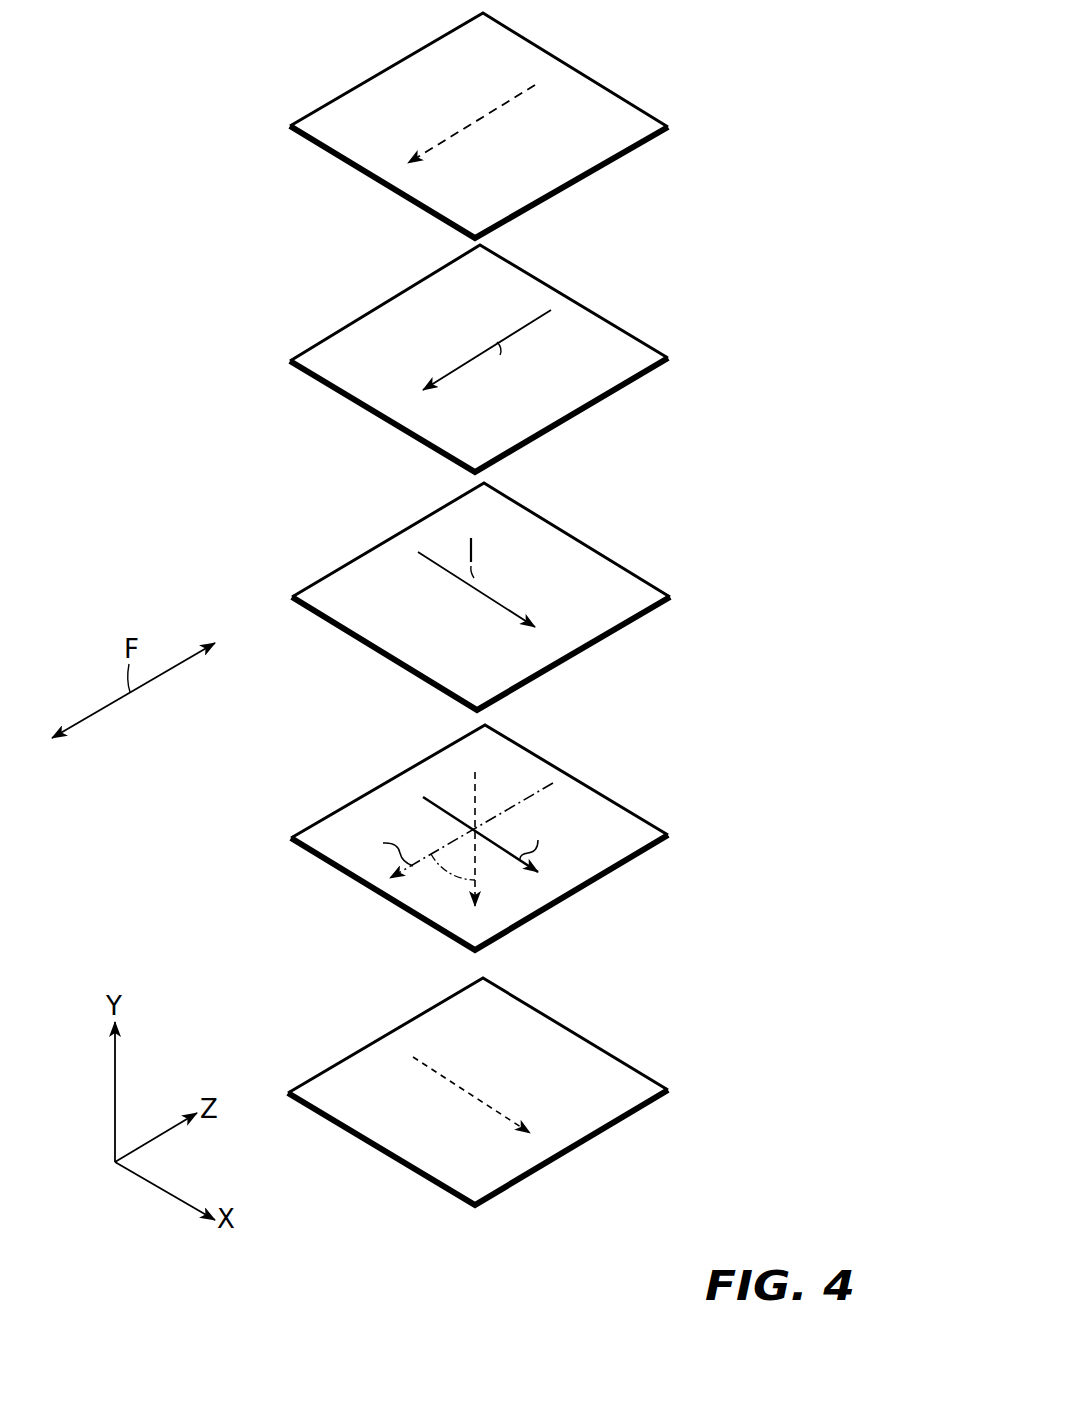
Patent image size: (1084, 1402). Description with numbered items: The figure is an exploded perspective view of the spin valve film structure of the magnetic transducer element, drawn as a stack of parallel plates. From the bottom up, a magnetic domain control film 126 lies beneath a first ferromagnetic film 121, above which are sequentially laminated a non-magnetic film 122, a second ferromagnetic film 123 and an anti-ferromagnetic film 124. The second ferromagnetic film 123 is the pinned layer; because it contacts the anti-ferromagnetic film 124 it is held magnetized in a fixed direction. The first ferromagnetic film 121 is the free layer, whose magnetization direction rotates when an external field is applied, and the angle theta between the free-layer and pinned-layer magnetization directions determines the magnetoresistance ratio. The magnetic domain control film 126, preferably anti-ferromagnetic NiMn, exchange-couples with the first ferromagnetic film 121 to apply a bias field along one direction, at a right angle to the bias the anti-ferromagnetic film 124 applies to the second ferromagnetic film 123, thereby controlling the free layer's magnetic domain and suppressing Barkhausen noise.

The anti-ferromagnetic film 124 is at (622, 125).
The second ferromagnetic film 123 is at (626, 359).
The non-magnetic film 122 is at (634, 598).
The first ferromagnetic film 121 is at (642, 834).
The magnetic domain control film 126 is at (638, 1088).